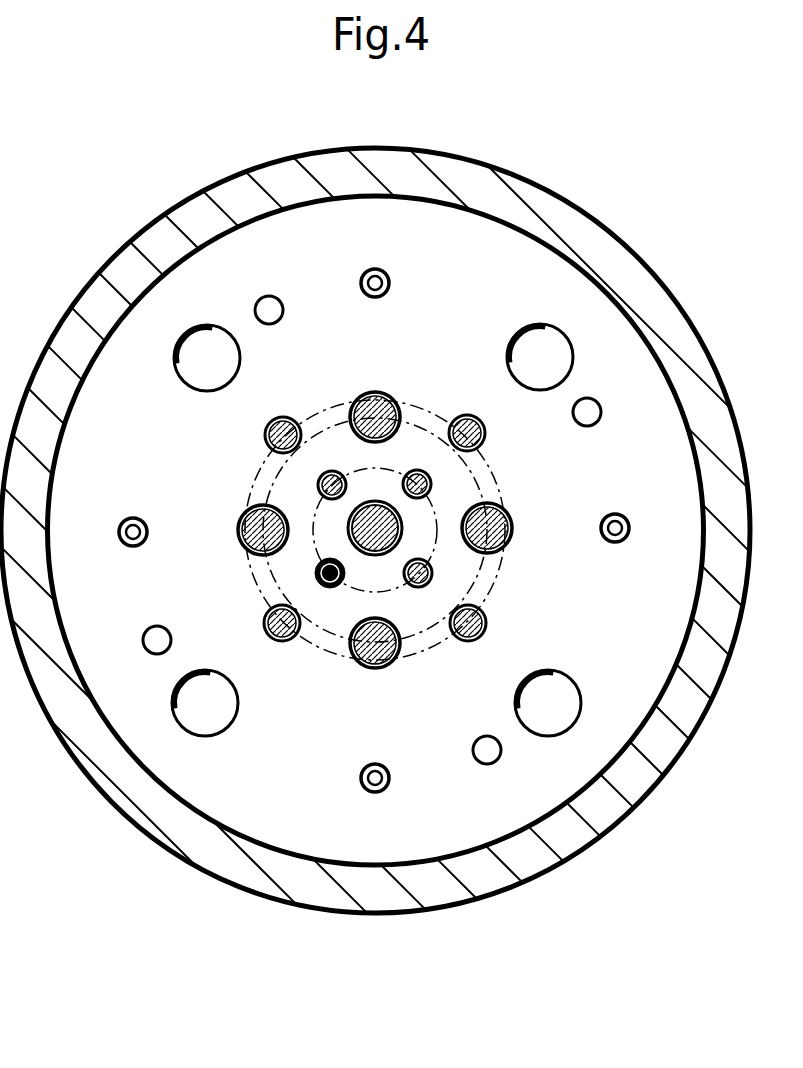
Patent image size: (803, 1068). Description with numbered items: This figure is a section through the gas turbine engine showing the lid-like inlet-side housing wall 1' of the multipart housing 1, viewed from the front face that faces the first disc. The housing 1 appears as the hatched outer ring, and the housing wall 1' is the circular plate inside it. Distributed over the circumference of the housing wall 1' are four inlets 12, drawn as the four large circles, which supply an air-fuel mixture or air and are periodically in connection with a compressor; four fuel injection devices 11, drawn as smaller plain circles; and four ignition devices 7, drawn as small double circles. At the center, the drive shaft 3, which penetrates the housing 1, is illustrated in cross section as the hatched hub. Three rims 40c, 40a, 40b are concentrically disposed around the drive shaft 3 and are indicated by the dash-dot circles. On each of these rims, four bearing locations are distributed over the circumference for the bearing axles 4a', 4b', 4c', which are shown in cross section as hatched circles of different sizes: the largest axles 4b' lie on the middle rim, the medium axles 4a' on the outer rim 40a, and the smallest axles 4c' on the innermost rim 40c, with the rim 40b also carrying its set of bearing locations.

The housing 1 is at (375, 512).
The housing wall 1' is at (376, 530).
The drive shaft 3 is at (356, 532).
The bearing axles 4a' is at (375, 555).
The bearing axles 4b' is at (351, 508).
The bearing axles 4c' is at (428, 509).
The ignition device 7 is at (367, 272).
The fuel injection device 11 is at (273, 300).
The inlet 12 is at (187, 363).
The rim 40a is at (480, 596).
The rim 40b is at (290, 585).
The rim 40c is at (358, 595).